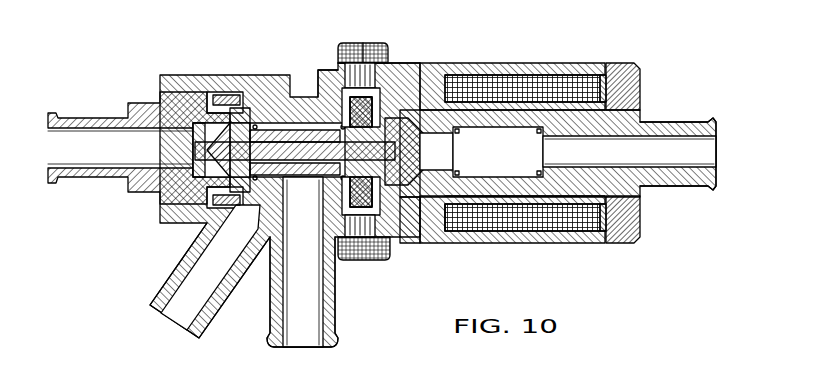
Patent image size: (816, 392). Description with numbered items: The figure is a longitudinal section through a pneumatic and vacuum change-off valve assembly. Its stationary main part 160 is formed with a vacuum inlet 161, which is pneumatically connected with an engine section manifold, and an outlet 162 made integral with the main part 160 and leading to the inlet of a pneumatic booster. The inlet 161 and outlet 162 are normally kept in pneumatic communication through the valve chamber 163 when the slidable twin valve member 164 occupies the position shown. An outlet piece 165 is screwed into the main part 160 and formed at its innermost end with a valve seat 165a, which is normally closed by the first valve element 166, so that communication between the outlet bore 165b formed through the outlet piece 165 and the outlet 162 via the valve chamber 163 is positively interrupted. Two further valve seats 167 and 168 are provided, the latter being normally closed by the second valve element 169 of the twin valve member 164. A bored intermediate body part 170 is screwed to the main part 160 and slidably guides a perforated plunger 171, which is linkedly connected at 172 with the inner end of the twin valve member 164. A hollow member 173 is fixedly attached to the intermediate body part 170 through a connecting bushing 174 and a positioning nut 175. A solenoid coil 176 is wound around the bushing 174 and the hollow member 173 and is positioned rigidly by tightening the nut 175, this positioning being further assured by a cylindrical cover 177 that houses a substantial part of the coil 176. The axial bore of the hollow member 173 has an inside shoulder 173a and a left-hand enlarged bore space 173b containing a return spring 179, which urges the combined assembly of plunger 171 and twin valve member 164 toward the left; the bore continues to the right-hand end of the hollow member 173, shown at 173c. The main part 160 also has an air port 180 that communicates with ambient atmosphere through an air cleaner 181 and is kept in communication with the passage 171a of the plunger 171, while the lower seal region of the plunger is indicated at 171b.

The stationary main part 160 is at (258, 74).
The vacuum inlet 161 is at (190, 286).
The outlet 162 is at (334, 315).
The valve chamber 163 is at (290, 205).
The slidable twin valve member 164 is at (312, 130).
The outlet piece 165 is at (110, 178).
The valve seat 165a is at (228, 118).
The outlet bore 165b is at (93, 145).
The first valve element 166 is at (227, 91).
The valve seat 167 is at (258, 242).
The valve seat 168 is at (320, 68).
The second valve element 169 is at (361, 55).
The bored intermediate body part 170 is at (433, 243).
The perforated plunger 171 is at (420, 147).
The passage 171a is at (386, 98).
The lower seal 171b is at (390, 232).
The linked connection 172 is at (440, 66).
The hollow member 173 is at (627, 193).
The inside shoulder 173a is at (537, 150).
The enlarged bore space 173b is at (528, 240).
The outlet nipple 173c is at (703, 154).
The connecting bushing 174 is at (483, 241).
The positioning nut 175 is at (622, 82).
The solenoid coil 176 is at (510, 83).
The cylindrical cover 177 is at (601, 72).
The return spring 179 is at (485, 132).
The air port 180 is at (368, 258).
The air cleaner 181 is at (387, 80).